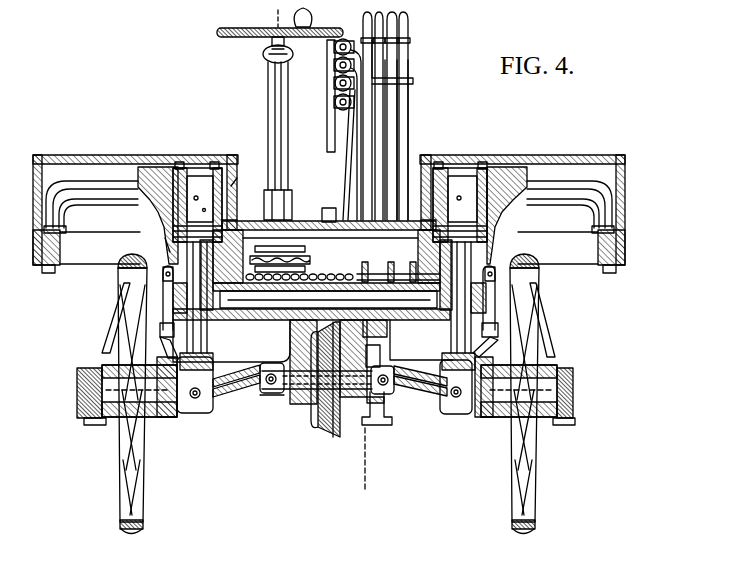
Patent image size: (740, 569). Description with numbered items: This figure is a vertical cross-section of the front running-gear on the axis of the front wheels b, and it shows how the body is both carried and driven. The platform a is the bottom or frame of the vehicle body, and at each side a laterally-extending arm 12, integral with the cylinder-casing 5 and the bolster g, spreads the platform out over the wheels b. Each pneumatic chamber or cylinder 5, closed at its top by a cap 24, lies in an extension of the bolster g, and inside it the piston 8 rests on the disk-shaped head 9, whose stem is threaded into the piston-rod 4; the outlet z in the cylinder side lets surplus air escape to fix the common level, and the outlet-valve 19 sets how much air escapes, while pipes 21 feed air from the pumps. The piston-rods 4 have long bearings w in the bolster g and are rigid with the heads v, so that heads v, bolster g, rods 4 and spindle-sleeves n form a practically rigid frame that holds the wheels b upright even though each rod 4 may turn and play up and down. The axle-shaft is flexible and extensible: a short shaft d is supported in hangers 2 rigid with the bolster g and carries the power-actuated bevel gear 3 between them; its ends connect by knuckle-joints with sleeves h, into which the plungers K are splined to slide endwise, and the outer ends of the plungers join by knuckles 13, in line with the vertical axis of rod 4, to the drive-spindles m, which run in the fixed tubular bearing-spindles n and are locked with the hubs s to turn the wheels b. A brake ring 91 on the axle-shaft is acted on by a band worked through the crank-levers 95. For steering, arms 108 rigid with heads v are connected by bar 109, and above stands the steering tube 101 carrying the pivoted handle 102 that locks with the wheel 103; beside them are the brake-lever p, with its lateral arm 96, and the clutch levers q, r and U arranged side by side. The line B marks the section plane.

The platform a is at (536, 156).
The arms 12 is at (329, 207).
The piston 8 is at (160, 224).
The head of the piston-rod 9 is at (166, 243).
The heads or caps 24 is at (212, 163).
The pneumatic chambers or cylinders 5 is at (237, 178).
The outlet z is at (236, 219).
The wheel 103 is at (255, 29).
The pivoted handle 102 is at (263, 54).
The tube 101 is at (267, 80).
The brake-lever p is at (364, 18).
The lateral arm 96 is at (405, 63).
The lever q is at (386, 102).
The lever r is at (398, 119).
The lever U is at (409, 136).
The outlet-valve 19 is at (334, 68).
The pipes 21 is at (346, 148).
The hangers 2 is at (350, 440).
The piston-rods 4 is at (452, 335).
The bolster g is at (312, 333).
The crank-levers 95 is at (362, 259).
The long bearings w is at (174, 294).
The bar 109 is at (496, 300).
The arms or levers 108 is at (147, 328).
The sleeves h is at (257, 400).
The power-actuated gear 3 is at (319, 430).
The brake rings or wheels 91 is at (377, 427).
The plungers K is at (262, 396).
The knuckles 13 is at (228, 398).
The head v is at (186, 414).
The short shaft d is at (277, 398).
The drive-spindle m is at (80, 402).
The hub s is at (78, 378).
The tubular bearing-spindle n is at (88, 418).
The wheels b is at (335, 394).
The section line B is at (318, 257).